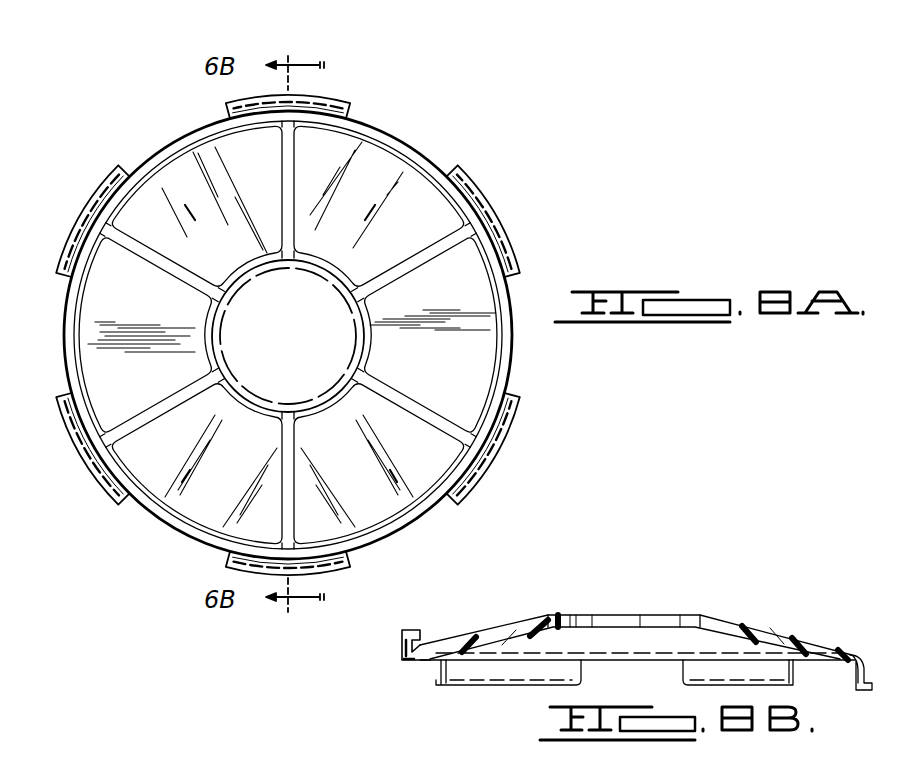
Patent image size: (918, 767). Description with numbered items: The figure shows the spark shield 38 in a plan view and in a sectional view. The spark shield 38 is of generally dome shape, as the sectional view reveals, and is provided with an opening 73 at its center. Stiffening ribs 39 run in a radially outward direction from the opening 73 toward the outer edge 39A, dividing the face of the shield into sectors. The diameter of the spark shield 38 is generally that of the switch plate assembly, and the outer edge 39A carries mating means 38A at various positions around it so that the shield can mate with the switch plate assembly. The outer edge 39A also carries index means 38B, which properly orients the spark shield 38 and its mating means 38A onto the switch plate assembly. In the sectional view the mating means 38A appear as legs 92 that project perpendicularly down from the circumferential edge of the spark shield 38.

In FIG. 6A, the spark shield 38 is at (457, 126).
In FIG. 6B, the spark shield 38 is at (391, 668).
In FIG. 6A, the mating means 38A is at (344, 97).
In FIG. 6A, the index means 38B is at (325, 560).
In FIG. 6B, the index means 38B is at (401, 645).
In FIG. 6A, the stiffening ribs 39 is at (362, 283).
In FIG. 6A, the outer edge 39A is at (512, 358).
In FIG. 6A, the opening 73 is at (334, 384).
In FIG. 6B, the opening 73 is at (690, 614).
In FIG. 6B, the legs 92 is at (462, 676).